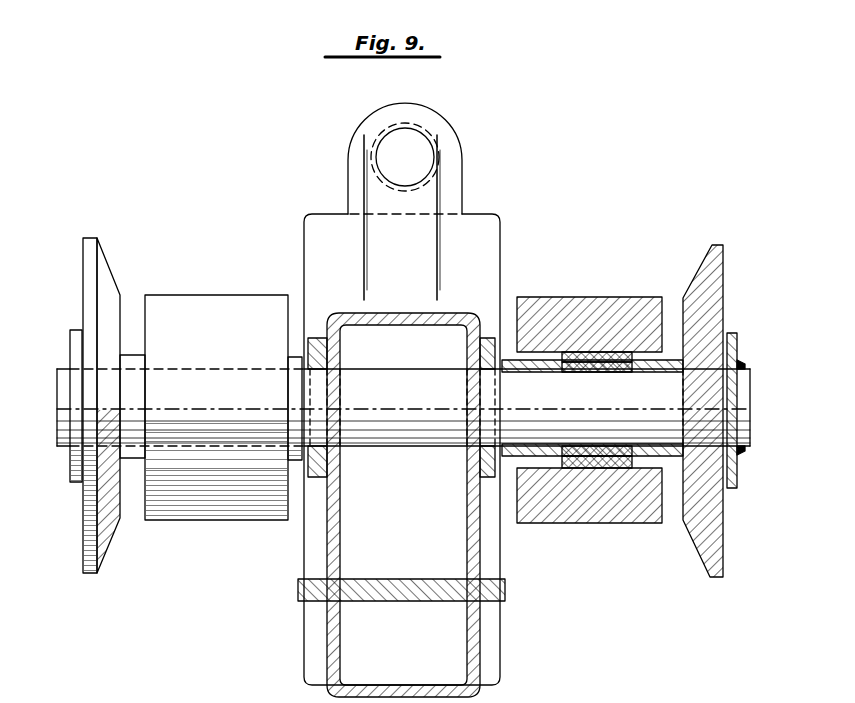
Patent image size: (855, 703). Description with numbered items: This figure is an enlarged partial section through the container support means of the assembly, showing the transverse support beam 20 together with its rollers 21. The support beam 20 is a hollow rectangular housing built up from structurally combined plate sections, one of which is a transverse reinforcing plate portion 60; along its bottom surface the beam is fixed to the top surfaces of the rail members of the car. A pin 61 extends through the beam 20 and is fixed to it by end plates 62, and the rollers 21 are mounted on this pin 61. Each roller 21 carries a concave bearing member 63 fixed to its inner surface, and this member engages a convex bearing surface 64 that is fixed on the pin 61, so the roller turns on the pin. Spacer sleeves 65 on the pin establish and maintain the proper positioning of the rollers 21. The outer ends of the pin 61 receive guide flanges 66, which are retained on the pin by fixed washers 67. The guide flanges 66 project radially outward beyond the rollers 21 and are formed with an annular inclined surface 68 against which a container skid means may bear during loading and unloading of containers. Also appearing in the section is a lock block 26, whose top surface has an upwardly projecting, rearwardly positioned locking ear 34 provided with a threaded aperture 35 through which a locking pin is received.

The transverse support beam 20 is at (478, 553).
The roller 21 is at (212, 295).
The lock block 26 is at (502, 226).
The locking ear 34 is at (448, 123).
The threaded aperture 35 is at (428, 157).
The transverse reinforcing plate portion 60 is at (365, 579).
The pin 61 is at (368, 448).
The end plate 62 is at (316, 338).
The concave bearing member 63 is at (582, 352).
The convex bearing surface 64 is at (583, 372).
The spacer sleeve 65 is at (128, 355).
The guide flange 66 is at (83, 253).
The fixed washer 67 is at (76, 345).
The annular inclined surface 68 is at (108, 262).